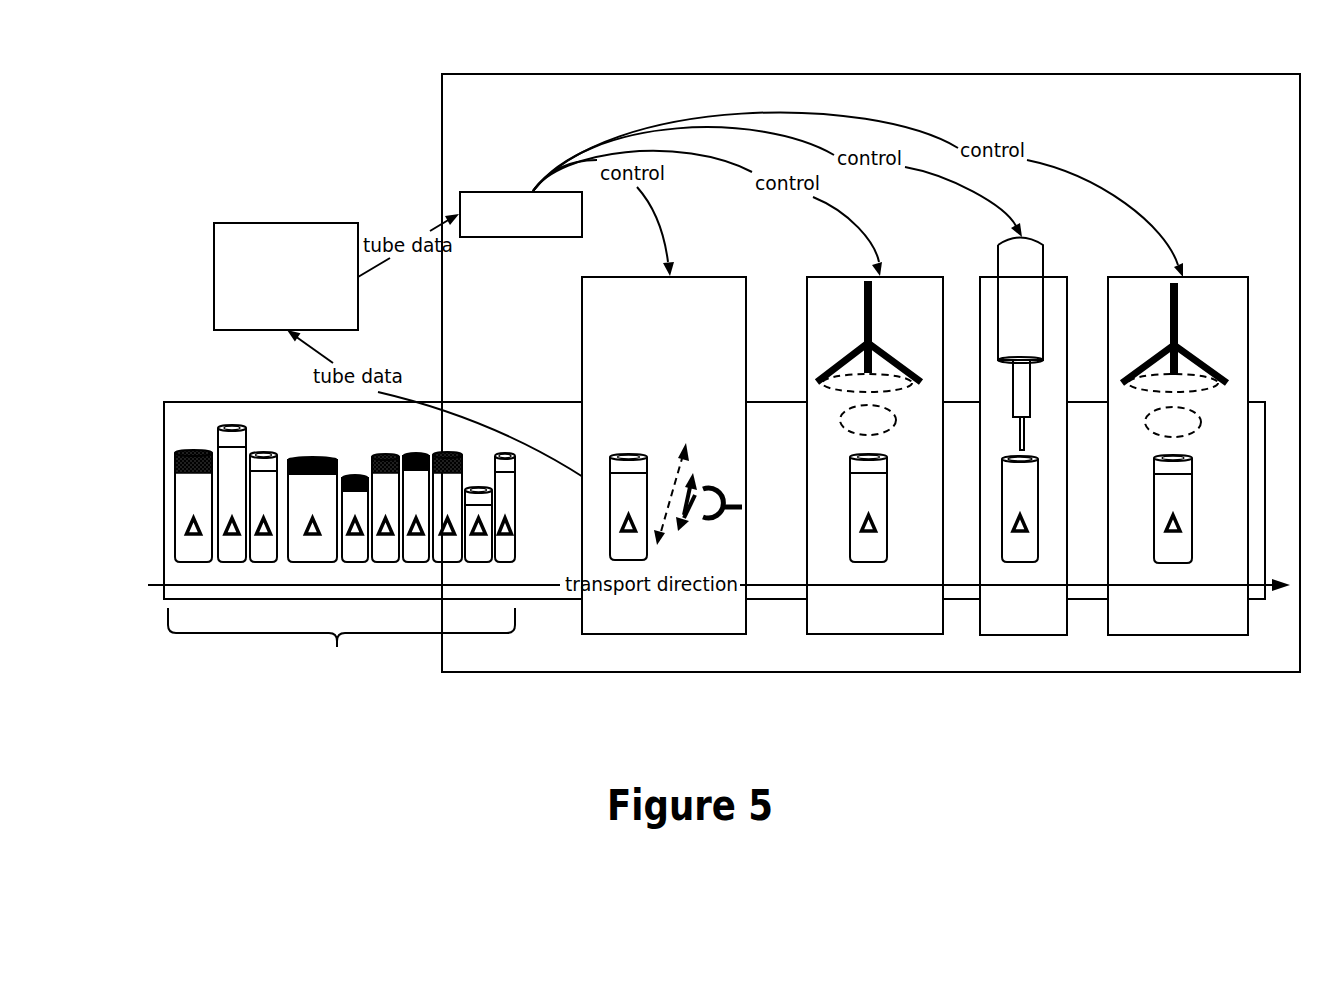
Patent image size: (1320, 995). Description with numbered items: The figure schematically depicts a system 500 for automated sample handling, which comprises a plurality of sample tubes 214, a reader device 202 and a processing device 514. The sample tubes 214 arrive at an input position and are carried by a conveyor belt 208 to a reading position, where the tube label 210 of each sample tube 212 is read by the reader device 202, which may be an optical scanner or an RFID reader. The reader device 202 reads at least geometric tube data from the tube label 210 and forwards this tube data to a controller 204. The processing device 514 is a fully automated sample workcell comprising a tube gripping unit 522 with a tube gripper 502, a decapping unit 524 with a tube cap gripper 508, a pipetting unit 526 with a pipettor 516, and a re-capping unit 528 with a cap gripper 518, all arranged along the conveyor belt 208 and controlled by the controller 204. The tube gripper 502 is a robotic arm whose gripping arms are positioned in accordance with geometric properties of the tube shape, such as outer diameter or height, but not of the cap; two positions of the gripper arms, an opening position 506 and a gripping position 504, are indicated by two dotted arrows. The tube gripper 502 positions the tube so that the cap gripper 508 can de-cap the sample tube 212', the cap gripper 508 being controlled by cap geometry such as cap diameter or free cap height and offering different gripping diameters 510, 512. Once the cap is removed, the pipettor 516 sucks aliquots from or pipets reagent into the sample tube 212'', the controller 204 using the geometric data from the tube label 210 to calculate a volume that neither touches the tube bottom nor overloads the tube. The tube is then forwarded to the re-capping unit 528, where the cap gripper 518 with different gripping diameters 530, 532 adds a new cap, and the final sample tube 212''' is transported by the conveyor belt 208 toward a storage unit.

The system 500 is at (223, 83).
The processing device 514 is at (722, 73).
The controller 204 is at (460, 192).
The reader device 202 is at (285, 223).
The conveyor belt 208 is at (168, 402).
The plurality of sample tubes 214 is at (354, 750).
The tube label 210 is at (627, 532).
The sample tube 212 is at (654, 583).
The sample tube 212' is at (891, 583).
The sample tube 212'' is at (1046, 584).
The final sample tube 212''' is at (1201, 584).
The tube gripping unit 522 is at (698, 276).
The decapping unit 524 is at (840, 277).
The pipetting unit 526 is at (986, 277).
The re-capping unit 528 is at (1133, 278).
The tube gripper 502 is at (742, 507).
The gripping position 504 is at (703, 530).
The opening position 506 is at (668, 497).
The tube cap gripper 508 is at (873, 297).
The gripping diameter 510 is at (873, 390).
The gripping diameter 512 is at (872, 437).
The pipettor 516 is at (1032, 258).
The cap gripper 518 is at (1178, 298).
The gripping diameter 530 is at (1178, 392).
The gripping diameter 532 is at (1176, 440).